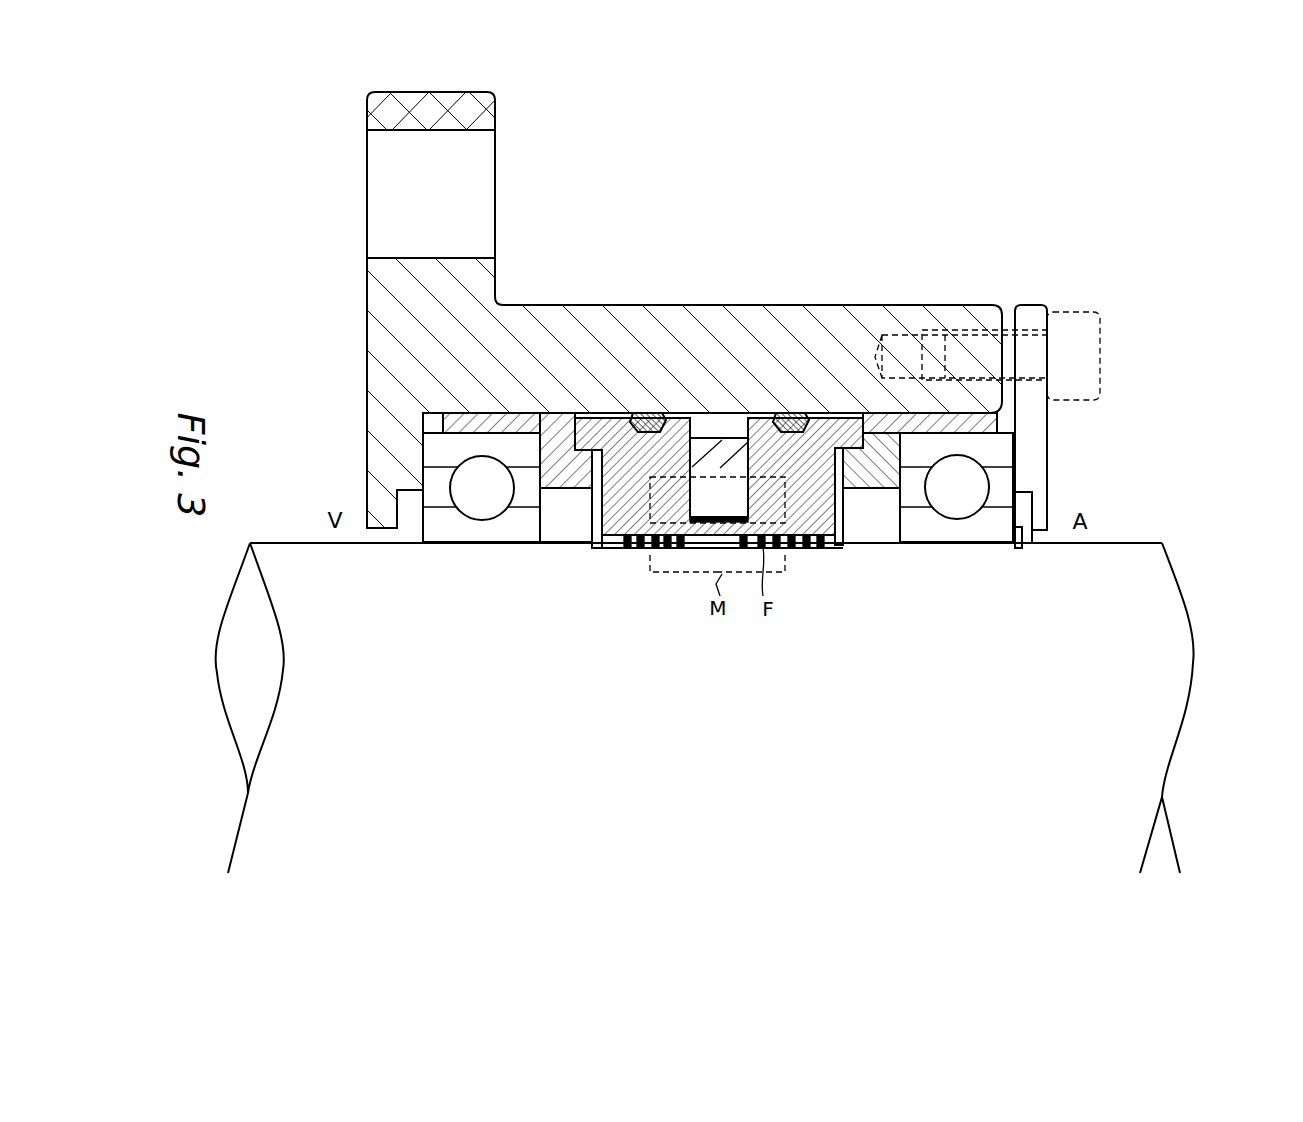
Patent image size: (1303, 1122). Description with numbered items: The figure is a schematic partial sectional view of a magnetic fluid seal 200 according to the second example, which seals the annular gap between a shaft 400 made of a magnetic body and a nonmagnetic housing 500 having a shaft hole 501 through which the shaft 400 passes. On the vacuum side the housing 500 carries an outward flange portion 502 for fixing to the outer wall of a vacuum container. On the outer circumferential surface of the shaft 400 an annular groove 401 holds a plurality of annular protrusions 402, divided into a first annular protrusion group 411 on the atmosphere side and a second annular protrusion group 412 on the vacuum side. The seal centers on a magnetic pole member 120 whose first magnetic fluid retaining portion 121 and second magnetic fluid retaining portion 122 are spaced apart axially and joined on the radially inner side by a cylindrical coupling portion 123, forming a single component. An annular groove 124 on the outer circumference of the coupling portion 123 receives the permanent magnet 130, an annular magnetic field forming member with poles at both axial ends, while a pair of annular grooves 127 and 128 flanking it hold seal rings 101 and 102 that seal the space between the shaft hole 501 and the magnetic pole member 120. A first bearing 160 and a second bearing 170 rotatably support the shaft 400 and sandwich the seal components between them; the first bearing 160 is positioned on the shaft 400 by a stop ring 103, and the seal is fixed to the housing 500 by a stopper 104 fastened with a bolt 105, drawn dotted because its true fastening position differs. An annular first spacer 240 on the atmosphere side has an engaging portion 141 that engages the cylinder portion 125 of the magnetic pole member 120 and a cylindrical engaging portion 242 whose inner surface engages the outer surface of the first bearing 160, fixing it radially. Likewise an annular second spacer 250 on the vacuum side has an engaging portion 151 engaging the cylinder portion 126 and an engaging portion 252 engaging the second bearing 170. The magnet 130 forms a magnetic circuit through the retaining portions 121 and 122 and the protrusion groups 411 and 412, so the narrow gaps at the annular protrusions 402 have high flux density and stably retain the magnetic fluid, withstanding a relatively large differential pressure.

The housing 500 is at (334, 100).
The outward flange portion 502 is at (497, 118).
The magnetic fluid seal 200 is at (1168, 410).
The bolt 105 is at (1085, 313).
The stopper 104 is at (1040, 470).
The stop ring 103 is at (1022, 550).
The shaft 400 is at (1178, 657).
The second bearing 170 is at (458, 522).
The first bearing 160 is at (990, 545).
The engaging portion 252 is at (488, 413).
The engaging portion 242 is at (933, 413).
The second spacer 250 is at (548, 500).
The first spacer 240 is at (888, 500).
The engaging portion 151 is at (583, 470).
The engaging portion 141 is at (857, 548).
The annular groove 128 is at (597, 450).
The annular groove 127 is at (824, 415).
The magnetic pole member 120 is at (743, 548).
The shaft hole 501 is at (708, 470).
The annular groove 124 is at (725, 465).
The permanent magnet 130 is at (718, 435).
The seal ring 102 is at (646, 432).
The seal ring 101 is at (812, 437).
The cylinder portion 126 is at (582, 420).
The cylinder portion 125 is at (863, 420).
The second magnetic fluid retaining portion 122 is at (612, 500).
The coupling portion 123 is at (713, 548).
The annular protrusions 402 is at (665, 548).
The first magnetic fluid retaining portion 121 is at (818, 548).
The second annular protrusion group 412 is at (644, 572).
The first annular protrusion group 411 is at (791, 572).
The annular groove 401 is at (840, 548).